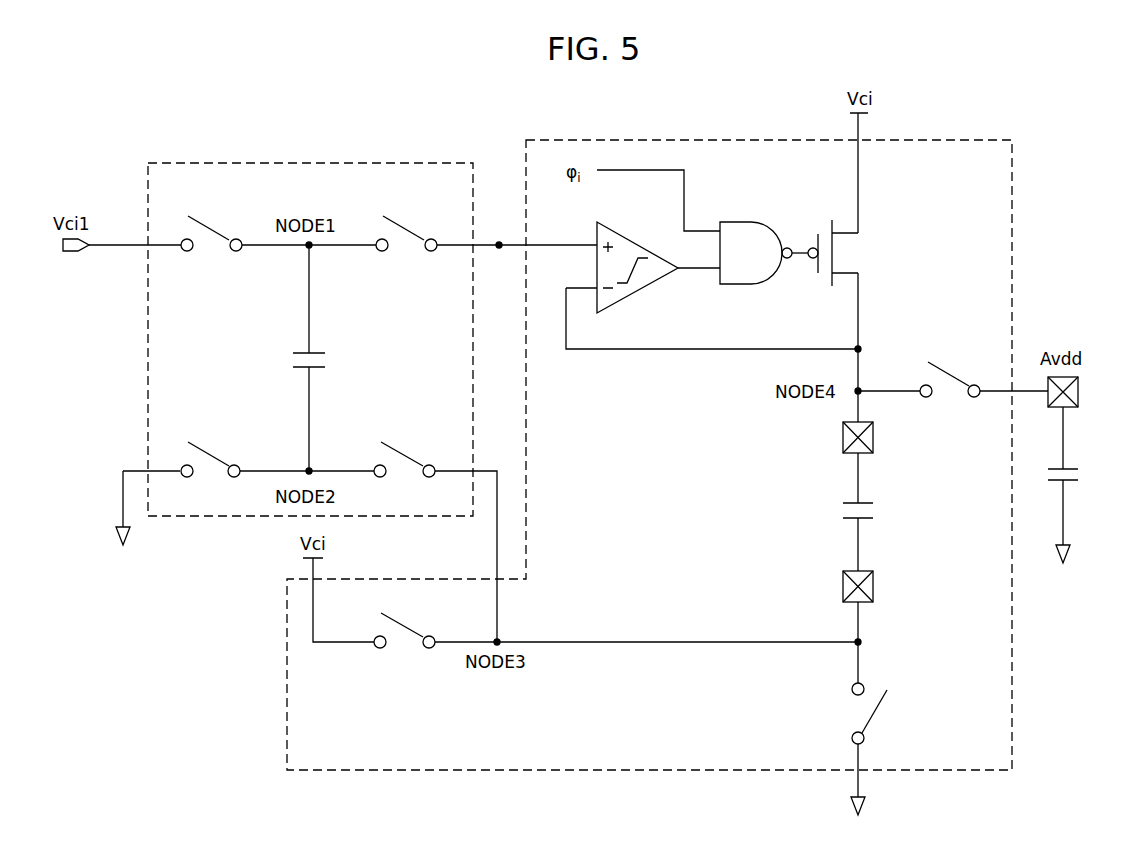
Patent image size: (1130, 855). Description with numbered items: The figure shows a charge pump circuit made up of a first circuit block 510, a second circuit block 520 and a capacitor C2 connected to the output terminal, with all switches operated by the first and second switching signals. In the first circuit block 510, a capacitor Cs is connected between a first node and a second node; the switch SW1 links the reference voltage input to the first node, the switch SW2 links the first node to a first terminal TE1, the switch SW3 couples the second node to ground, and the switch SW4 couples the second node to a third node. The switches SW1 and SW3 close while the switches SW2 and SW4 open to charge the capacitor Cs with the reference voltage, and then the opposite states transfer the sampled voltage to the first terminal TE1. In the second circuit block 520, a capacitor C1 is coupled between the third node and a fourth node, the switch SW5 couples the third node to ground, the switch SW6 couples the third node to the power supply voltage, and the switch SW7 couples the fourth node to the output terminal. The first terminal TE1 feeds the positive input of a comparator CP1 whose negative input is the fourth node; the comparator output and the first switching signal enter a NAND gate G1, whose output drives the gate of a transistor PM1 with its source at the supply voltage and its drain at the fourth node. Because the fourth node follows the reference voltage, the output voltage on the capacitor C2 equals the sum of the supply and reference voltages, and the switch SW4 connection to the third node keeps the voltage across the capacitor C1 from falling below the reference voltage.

The first circuit block 510 is at (312, 163).
The second circuit block 520 is at (930, 140).
The switch SW1 is at (210, 219).
The switch SW2 is at (405, 219).
The switch SW3 is at (210, 446).
The switch SW4 is at (403, 446).
The switch SW5 is at (821, 713).
The switch SW6 is at (403, 648).
The switch SW7 is at (947, 368).
The capacitor Cs is at (322, 358).
The capacitor C1 is at (873, 512).
The capacitor C2 is at (1078, 476).
The comparator CP1 is at (637, 290).
The NAND gate G1 is at (745, 222).
The transistor PM1 is at (853, 253).
The first terminal TE1 is at (498, 234).